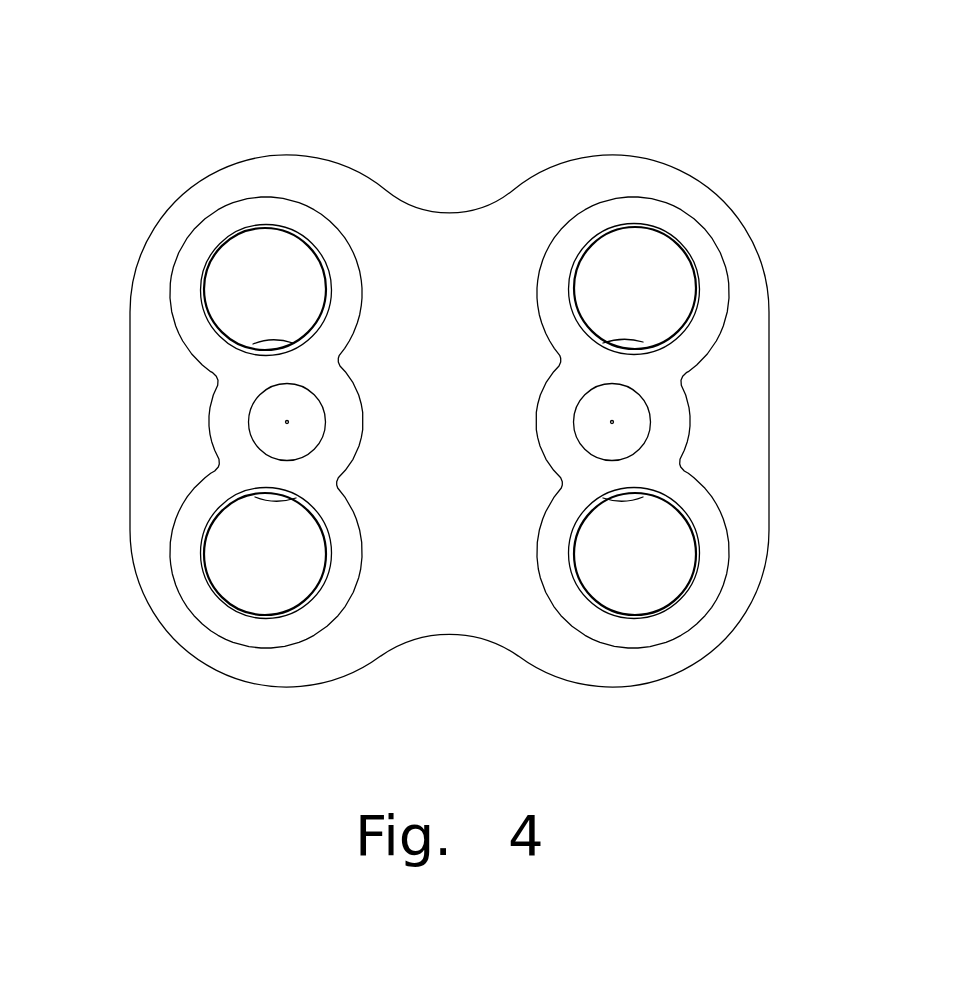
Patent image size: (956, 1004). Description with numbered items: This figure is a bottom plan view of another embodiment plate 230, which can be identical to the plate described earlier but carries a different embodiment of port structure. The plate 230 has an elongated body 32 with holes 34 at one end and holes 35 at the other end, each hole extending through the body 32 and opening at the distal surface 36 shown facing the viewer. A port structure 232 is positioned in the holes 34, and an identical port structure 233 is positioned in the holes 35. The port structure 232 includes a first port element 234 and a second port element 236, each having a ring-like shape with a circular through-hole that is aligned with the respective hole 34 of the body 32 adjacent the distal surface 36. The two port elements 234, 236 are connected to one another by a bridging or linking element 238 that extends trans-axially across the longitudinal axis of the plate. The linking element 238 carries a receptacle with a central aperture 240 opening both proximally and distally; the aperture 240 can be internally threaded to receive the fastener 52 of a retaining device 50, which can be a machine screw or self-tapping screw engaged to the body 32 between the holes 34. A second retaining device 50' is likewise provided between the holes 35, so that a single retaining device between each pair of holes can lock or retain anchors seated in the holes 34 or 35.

The plate 230 is at (163, 100).
The elongated body 32 is at (128, 473).
The port structure 233 is at (285, 195).
The port structure 232 is at (655, 198).
The hole 35 is at (250, 273).
The hole 34 is at (672, 267).
The second retaining device 50' is at (196, 404).
The fastener 52 is at (598, 408).
The retaining device 50 is at (734, 366).
The second port element 236 is at (717, 282).
The linking element 238 is at (673, 407).
The central aperture 240 is at (680, 443).
The distal surface 36 is at (465, 542).
The first port element 234 is at (705, 585).